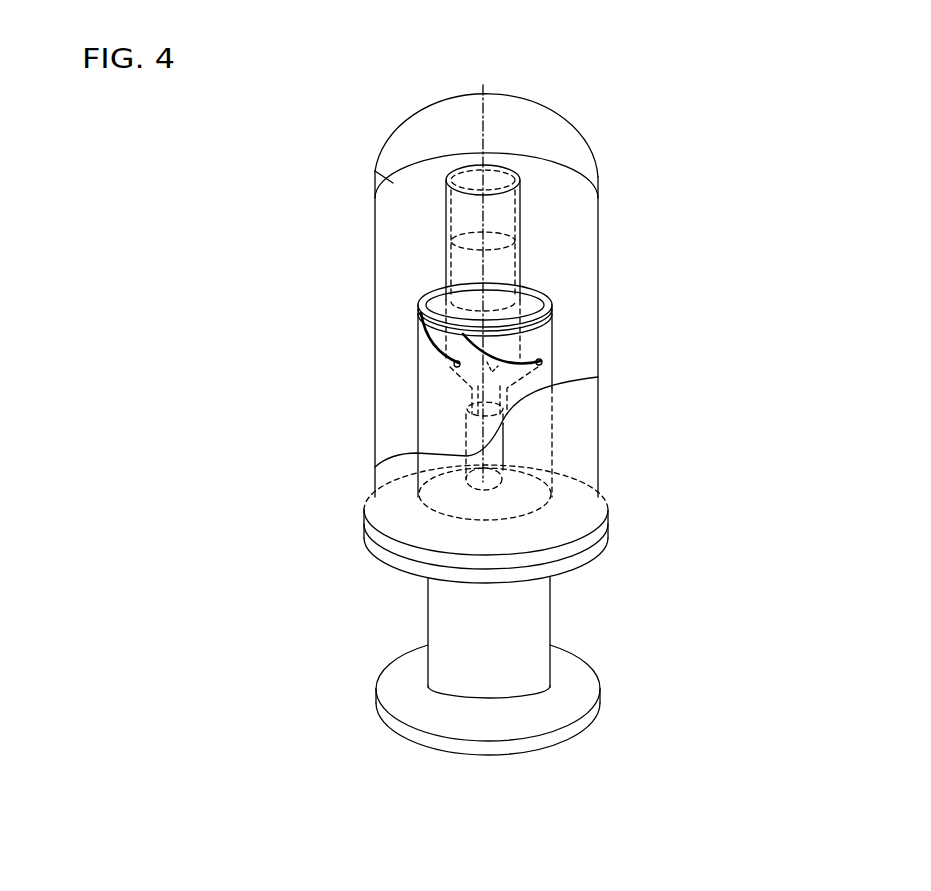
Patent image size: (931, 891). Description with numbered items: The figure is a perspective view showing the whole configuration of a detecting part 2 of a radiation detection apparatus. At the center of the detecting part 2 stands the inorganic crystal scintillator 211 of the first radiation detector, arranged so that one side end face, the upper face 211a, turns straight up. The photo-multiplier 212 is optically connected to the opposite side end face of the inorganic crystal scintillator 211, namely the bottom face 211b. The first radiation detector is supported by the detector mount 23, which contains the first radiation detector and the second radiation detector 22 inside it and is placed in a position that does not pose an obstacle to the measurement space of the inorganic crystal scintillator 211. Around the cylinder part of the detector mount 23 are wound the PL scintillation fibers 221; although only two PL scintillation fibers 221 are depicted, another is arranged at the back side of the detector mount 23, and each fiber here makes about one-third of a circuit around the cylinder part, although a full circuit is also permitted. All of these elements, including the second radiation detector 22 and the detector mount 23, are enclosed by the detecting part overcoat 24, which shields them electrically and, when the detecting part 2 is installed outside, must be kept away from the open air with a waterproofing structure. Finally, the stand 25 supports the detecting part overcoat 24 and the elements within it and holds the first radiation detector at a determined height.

The detecting part 2 is at (770, 73).
The detecting part overcoat 24 is at (571, 133).
The stand 25 is at (549, 619).
The detector mount 23 is at (552, 335).
The second radiation detector 22 is at (502, 449).
The PL scintillation fiber 221 is at (432, 357).
The inorganic crystal scintillator 211 is at (520, 226).
The upper face 211a is at (496, 166).
The bottom face 211b is at (446, 242).
The photo-multiplier 212 is at (520, 270).